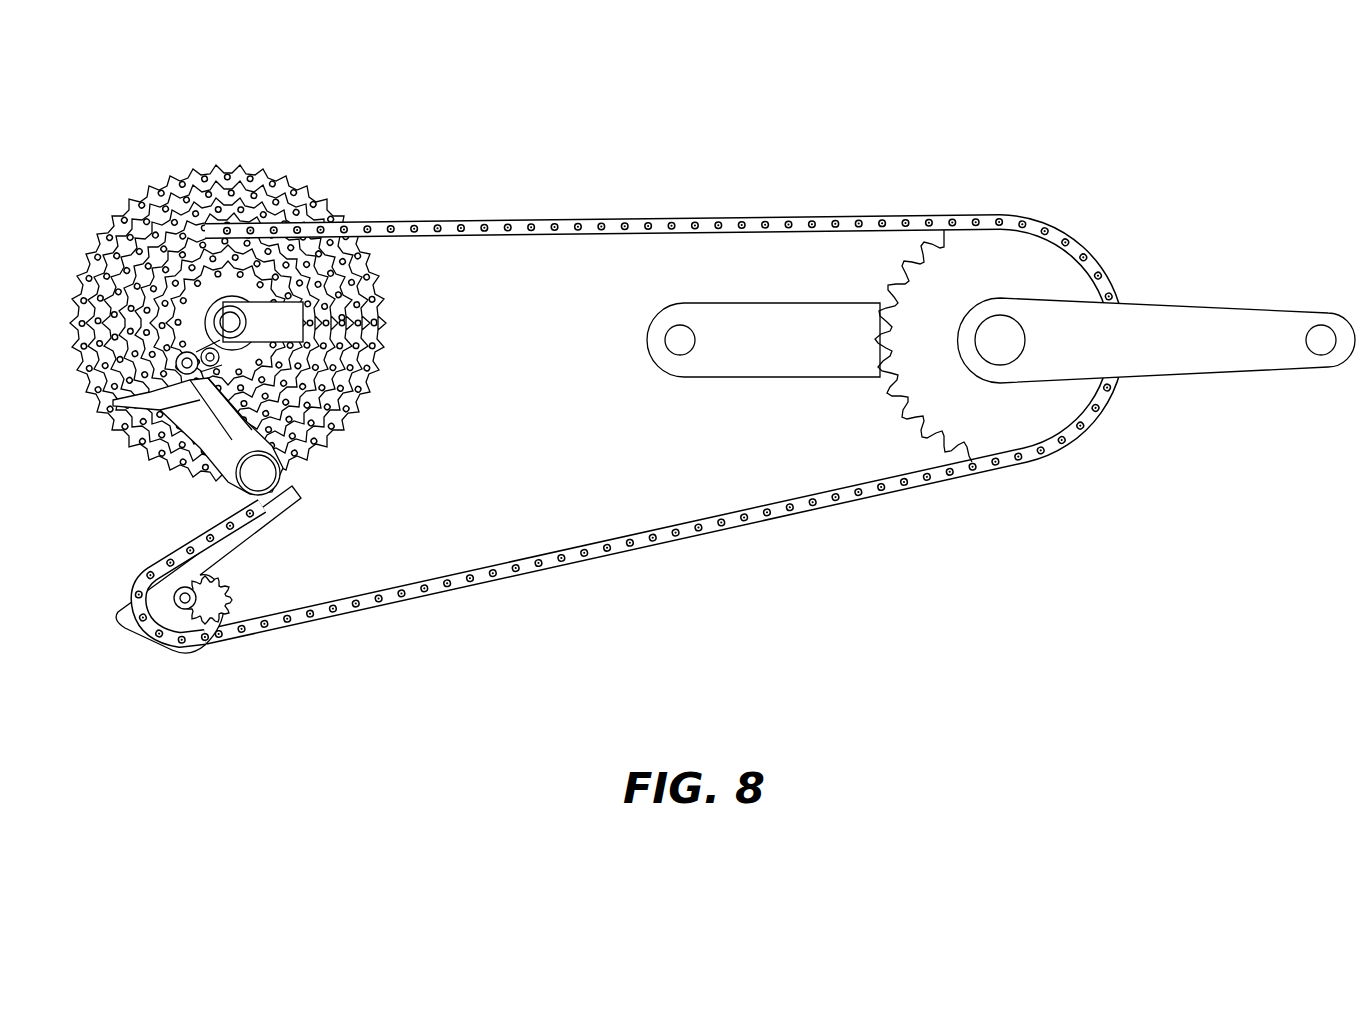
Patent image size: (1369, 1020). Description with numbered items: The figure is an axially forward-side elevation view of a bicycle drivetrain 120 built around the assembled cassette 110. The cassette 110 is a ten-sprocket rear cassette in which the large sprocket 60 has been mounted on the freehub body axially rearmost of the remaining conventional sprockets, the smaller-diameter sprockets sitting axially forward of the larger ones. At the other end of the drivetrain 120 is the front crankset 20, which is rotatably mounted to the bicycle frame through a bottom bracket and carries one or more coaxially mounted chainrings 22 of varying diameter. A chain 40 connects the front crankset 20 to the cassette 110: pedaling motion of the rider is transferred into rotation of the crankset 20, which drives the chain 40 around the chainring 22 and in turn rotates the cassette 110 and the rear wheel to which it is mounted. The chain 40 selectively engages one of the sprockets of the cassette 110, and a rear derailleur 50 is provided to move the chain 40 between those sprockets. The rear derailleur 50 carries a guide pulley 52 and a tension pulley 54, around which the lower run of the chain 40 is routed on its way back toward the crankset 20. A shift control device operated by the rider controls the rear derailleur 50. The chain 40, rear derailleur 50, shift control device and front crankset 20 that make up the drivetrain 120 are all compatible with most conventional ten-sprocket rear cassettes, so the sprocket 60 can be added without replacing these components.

The drivetrain 120 is at (712, 397).
The sprocket 60 is at (275, 197).
The cassette 110 is at (309, 318).
The chain 40 is at (858, 215).
The front crankset 20 is at (1001, 346).
The chainring 22 is at (888, 282).
The rear derailleur 50 is at (259, 501).
The guide pulley 52 is at (283, 500).
The tension pulley 54 is at (216, 638).